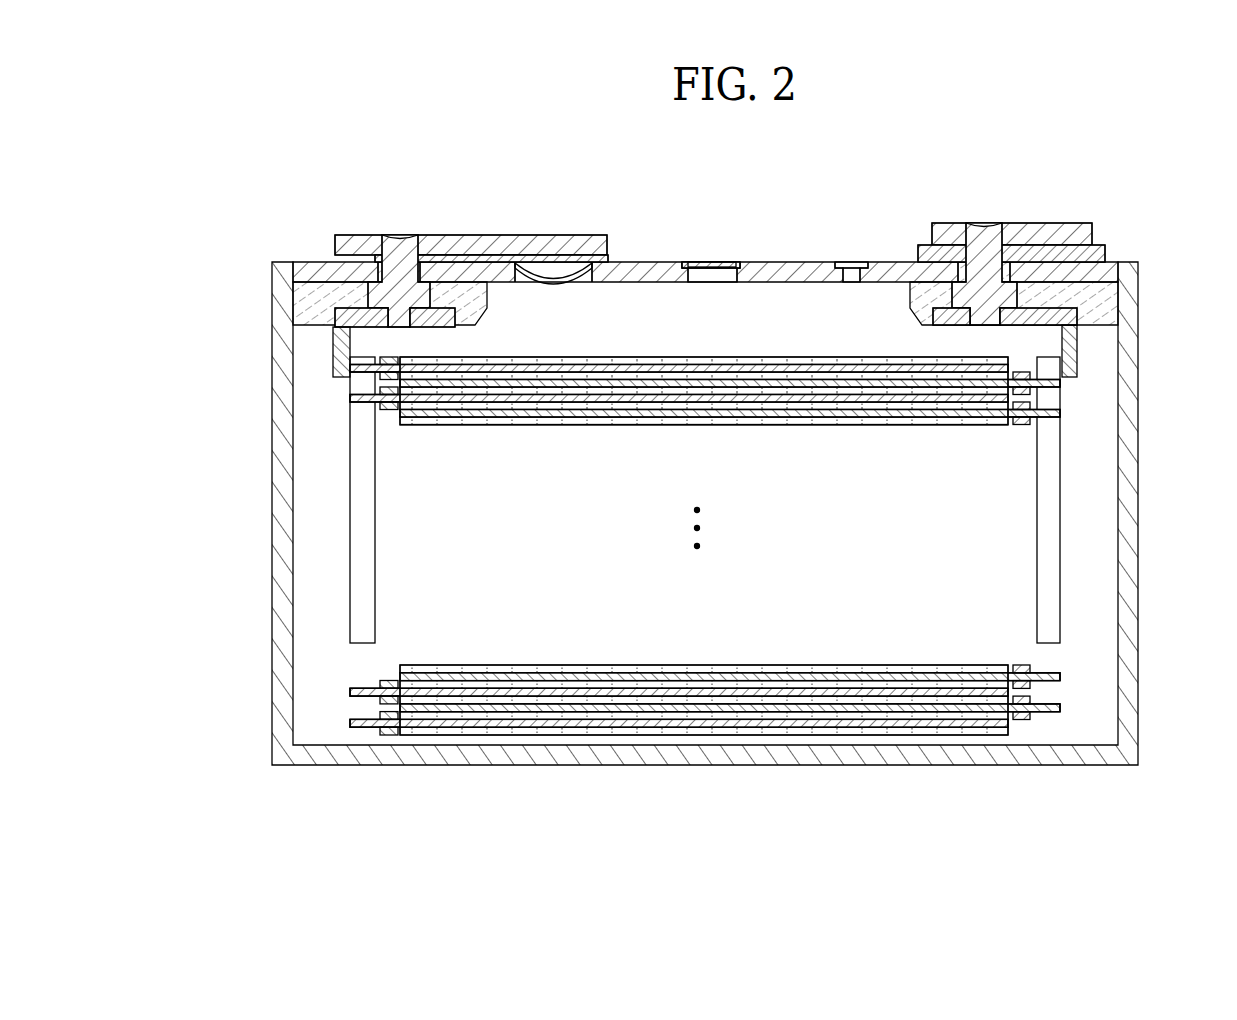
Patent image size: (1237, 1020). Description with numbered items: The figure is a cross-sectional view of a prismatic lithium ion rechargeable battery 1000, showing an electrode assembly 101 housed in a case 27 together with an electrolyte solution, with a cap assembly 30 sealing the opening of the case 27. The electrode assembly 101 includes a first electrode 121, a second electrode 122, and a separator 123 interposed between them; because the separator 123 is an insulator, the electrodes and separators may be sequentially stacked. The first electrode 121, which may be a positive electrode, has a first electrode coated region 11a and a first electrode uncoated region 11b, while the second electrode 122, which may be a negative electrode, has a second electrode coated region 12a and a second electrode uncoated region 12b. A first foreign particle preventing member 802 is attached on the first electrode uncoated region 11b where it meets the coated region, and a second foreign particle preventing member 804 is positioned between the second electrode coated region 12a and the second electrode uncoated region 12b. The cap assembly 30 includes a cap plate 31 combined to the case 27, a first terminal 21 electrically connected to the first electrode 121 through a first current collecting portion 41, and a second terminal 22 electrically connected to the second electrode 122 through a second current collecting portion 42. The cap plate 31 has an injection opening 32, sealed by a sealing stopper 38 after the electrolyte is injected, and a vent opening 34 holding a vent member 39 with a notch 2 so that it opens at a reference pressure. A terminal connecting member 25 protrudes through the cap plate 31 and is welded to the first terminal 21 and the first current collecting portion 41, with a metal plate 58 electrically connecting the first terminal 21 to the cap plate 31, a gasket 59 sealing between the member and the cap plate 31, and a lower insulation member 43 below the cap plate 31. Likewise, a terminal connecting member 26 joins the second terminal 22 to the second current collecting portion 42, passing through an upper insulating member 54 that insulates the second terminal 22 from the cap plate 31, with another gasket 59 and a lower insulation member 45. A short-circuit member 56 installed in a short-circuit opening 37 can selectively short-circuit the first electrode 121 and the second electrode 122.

The rechargeable battery 1000 is at (613, 142).
The notch 2 is at (709, 262).
The first electrode coated region 11a is at (907, 728).
The first electrode uncoated region 11b is at (1034, 599).
The second electrode coated region 12a is at (495, 728).
The second electrode uncoated region 12b is at (375, 592).
The first terminal 21 is at (1045, 224).
The second terminal 22 is at (352, 235).
The terminal connecting member 25 is at (985, 238).
The terminal connecting member 26 is at (399, 236).
The case 27 is at (1128, 545).
The cap assembly 30 is at (705, 249).
The cap plate 31 is at (649, 268).
The injection opening 32 is at (851, 284).
The vent opening 34 is at (712, 284).
The short-circuit opening 37 is at (526, 266).
The sealing stopper 38 is at (849, 265).
The vent member 39 is at (736, 264).
The first current collecting portion 41 is at (1048, 395).
The second current collecting portion 42 is at (362, 455).
The lower insulation member 43 is at (1100, 302).
The lower insulation member 45 is at (310, 302).
The upper insulating member 54 is at (466, 252).
The short-circuit member 56 is at (553, 276).
The metal plate 58 is at (1100, 253).
The gasket 59 is at (362, 268).
The electrode assembly 101 is at (806, 738).
The first electrode 121 is at (730, 620).
The second electrode 122 is at (679, 612).
The separator 123 is at (703, 738).
The first foreign particle preventing member 802 is at (390, 404).
The second foreign particle preventing member 804 is at (1028, 686).